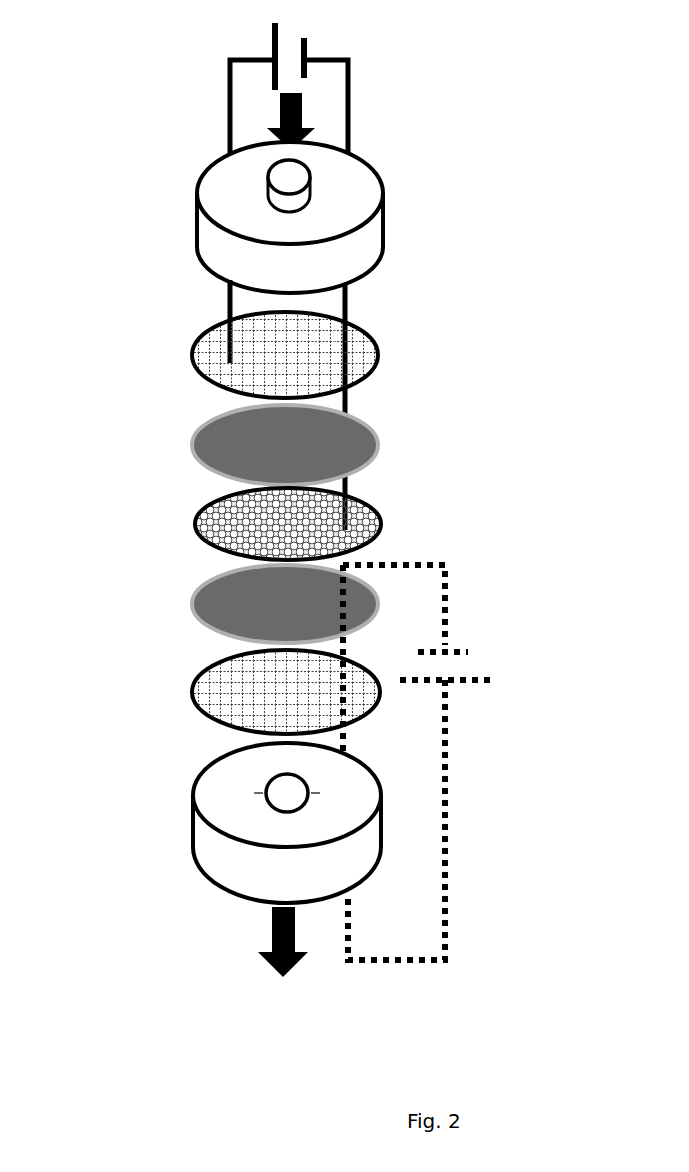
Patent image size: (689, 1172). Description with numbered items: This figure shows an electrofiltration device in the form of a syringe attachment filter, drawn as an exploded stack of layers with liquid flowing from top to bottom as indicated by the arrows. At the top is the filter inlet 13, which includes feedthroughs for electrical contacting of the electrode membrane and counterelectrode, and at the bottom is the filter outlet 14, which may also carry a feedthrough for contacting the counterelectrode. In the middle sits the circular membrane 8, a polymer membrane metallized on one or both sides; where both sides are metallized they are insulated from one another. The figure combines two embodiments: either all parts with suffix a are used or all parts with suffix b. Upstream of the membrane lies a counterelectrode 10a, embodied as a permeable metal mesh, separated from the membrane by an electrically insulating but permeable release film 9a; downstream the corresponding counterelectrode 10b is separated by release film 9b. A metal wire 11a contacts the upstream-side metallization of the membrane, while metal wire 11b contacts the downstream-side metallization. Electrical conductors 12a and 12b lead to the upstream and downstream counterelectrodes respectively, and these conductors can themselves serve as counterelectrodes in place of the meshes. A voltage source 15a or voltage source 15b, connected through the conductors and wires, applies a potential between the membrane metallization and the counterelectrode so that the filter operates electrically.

The circular membrane 8 is at (233, 523).
The electrically insulating, permeable release film 9a is at (243, 445).
The electrically insulating, permeable release film 9b is at (250, 597).
The counterelectrode 10a is at (222, 342).
The counterelectrode 10b is at (240, 688).
The metal wire 11a is at (348, 107).
The metal wire 11b is at (393, 560).
The electrical conductor 12a is at (223, 312).
The electrical conductor 12b is at (342, 738).
The filter inlet 13 is at (263, 193).
The filter outlet 14 is at (250, 797).
The voltage source 15a is at (323, 56).
The voltage source 15b is at (479, 664).